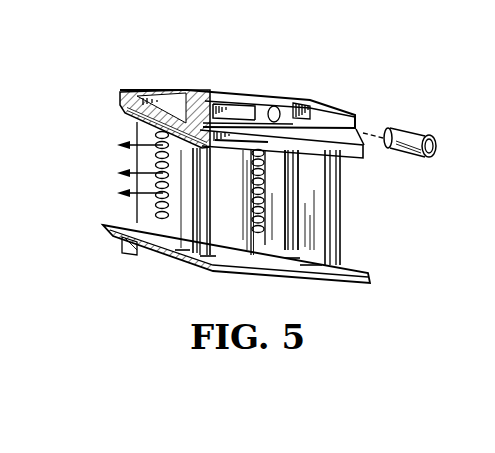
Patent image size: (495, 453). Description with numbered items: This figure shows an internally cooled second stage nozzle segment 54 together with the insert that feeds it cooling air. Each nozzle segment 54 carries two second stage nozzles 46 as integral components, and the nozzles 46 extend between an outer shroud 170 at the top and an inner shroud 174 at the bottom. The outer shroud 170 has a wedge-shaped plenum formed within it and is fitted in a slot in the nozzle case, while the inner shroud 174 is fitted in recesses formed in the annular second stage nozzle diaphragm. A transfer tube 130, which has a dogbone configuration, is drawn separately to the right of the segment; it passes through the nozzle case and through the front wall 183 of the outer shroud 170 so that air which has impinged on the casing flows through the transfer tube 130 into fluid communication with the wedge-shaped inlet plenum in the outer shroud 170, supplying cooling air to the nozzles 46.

The nozzle segment 54 is at (246, 68).
The front wall 183 is at (260, 118).
The transfer tube 130 is at (418, 133).
The outer shroud 170 is at (339, 150).
The second stage nozzle 46 is at (322, 215).
The inner shroud 174 is at (283, 272).